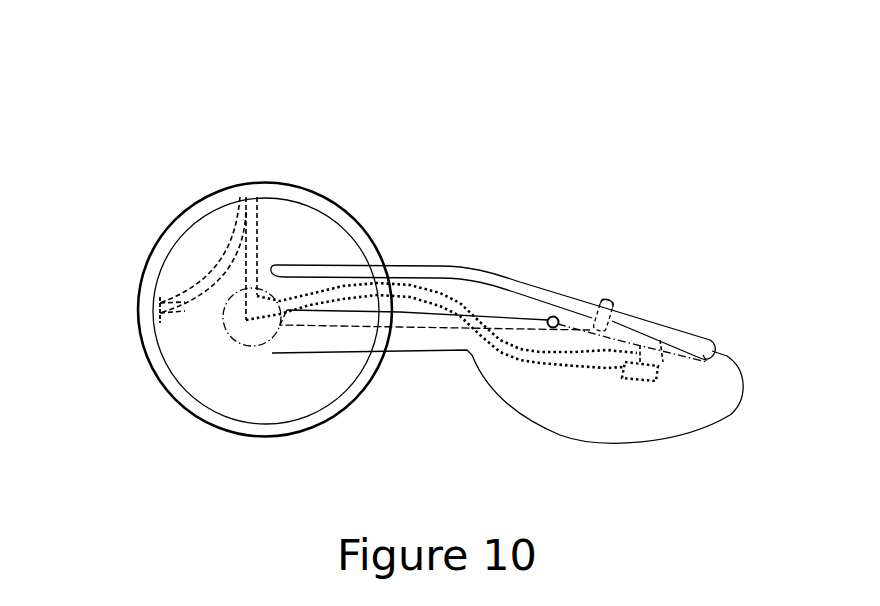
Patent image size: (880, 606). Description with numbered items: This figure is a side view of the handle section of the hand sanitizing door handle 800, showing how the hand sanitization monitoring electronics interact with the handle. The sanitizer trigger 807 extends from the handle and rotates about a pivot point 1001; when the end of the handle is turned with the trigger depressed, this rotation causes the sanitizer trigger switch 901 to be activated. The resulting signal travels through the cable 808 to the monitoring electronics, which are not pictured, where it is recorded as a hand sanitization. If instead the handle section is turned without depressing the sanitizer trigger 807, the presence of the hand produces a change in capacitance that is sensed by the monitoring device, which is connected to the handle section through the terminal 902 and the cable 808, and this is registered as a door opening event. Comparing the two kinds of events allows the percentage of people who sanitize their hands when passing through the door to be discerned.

The hand sanitizing door handle 800 is at (245, 100).
The sanitizer trigger 807 is at (645, 313).
The cable 808 is at (230, 248).
The terminal 902 is at (157, 317).
The pivot point 1001 is at (554, 316).
The sanitizer trigger switch 901 is at (650, 388).